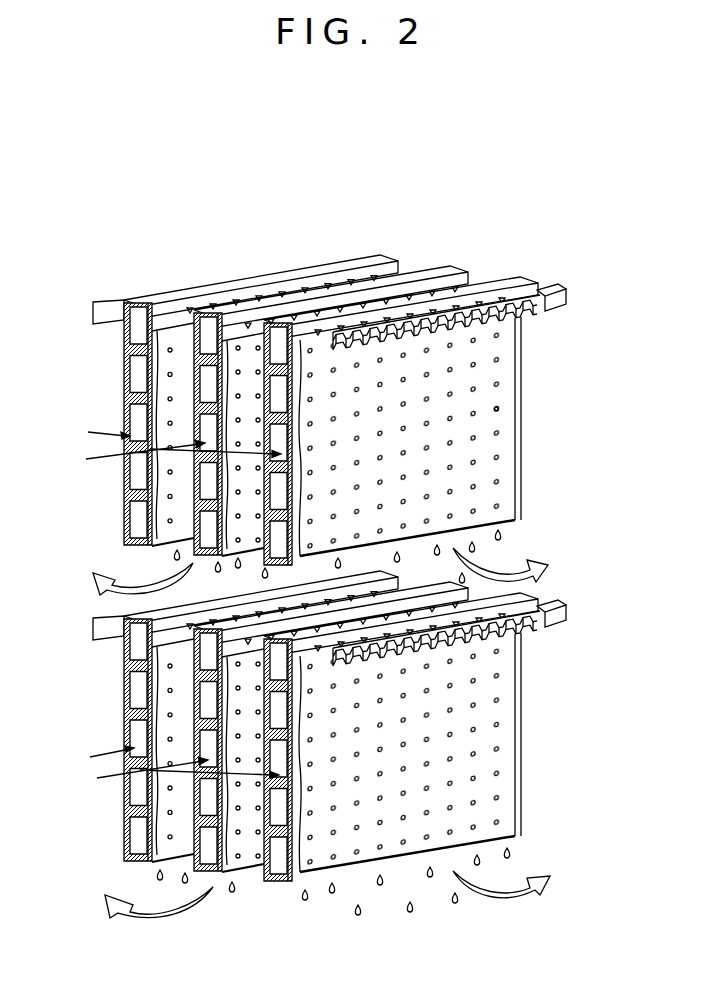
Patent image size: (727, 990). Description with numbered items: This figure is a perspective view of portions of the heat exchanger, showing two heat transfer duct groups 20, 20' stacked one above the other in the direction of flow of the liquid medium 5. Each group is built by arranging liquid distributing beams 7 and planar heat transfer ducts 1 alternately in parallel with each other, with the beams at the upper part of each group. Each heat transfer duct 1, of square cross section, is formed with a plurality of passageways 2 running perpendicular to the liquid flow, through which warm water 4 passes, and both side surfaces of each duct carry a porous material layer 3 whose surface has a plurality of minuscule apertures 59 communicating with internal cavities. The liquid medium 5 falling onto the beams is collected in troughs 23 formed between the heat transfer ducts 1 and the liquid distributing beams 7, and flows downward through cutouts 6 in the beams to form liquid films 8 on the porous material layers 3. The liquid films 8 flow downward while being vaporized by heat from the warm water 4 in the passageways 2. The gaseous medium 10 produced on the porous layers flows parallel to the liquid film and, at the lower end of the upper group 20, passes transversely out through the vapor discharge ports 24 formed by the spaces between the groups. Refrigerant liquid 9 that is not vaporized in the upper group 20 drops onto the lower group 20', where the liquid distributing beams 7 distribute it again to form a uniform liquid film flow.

The heat transfer duct 1 is at (134, 396).
The passageway 2 is at (141, 310).
The porous material layer 3 is at (440, 432).
The warm water 4 is at (83, 834).
The liquid medium 5 is at (430, 310).
The cutout 6 is at (557, 273).
The liquid distributing beam 7 is at (497, 281).
The liquid film 8 is at (500, 446).
The refrigerant liquid 9 is at (412, 906).
The gaseous medium 10 is at (543, 857).
The heat transfer duct group 20 is at (365, 381).
The heat transfer duct group 20' is at (377, 736).
The trough 23 is at (500, 270).
The vapor discharge port 24 is at (521, 548).
The minuscule aperture 59 is at (521, 409).